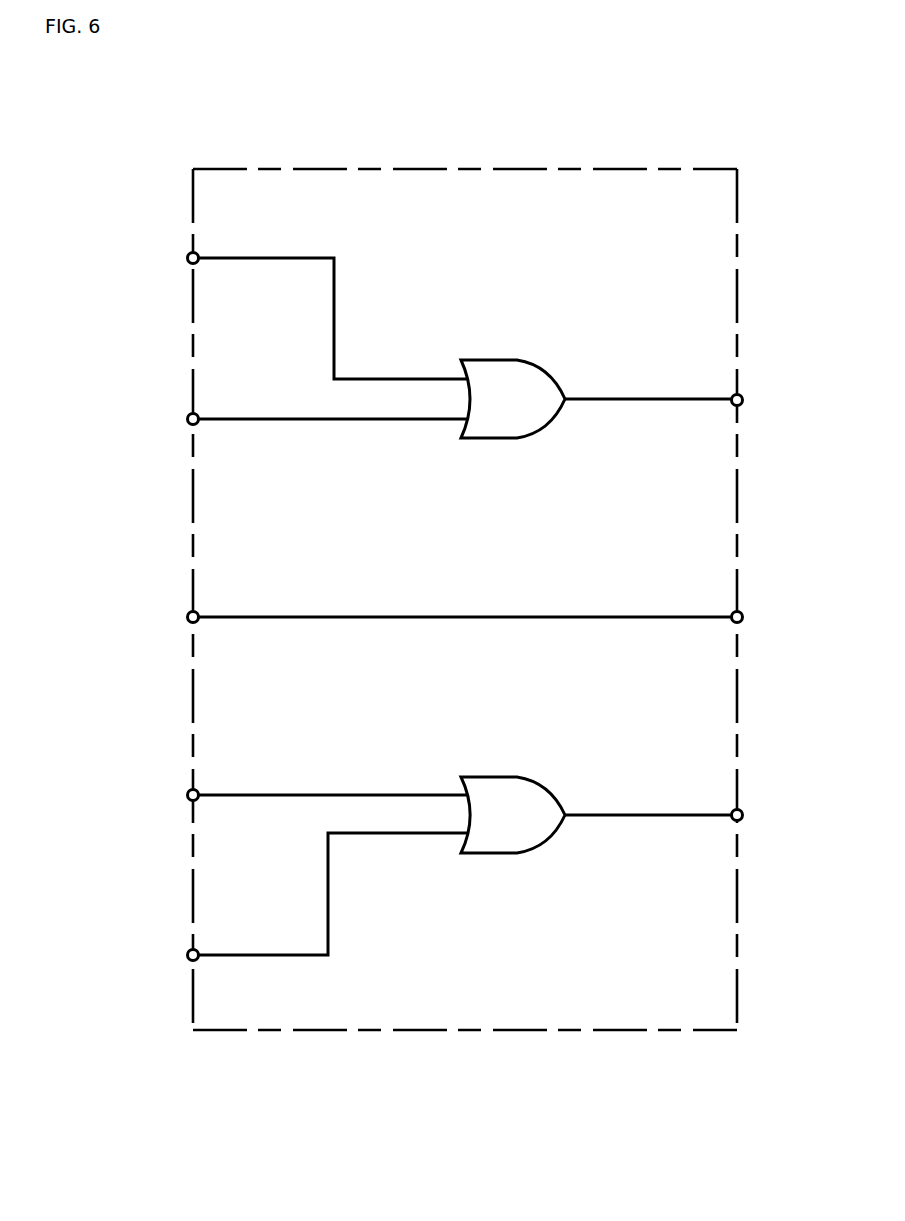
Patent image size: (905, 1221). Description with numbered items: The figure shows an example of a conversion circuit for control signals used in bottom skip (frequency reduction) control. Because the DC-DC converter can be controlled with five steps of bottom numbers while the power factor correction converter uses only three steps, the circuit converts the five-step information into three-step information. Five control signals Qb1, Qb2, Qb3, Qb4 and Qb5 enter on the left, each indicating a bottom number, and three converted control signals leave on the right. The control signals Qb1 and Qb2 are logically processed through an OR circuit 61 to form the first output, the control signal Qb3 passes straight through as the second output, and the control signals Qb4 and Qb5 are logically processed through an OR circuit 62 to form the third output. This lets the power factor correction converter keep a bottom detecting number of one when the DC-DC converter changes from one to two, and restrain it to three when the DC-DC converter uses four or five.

The OR circuit 61 is at (517, 360).
The OR circuit 62 is at (528, 777).
The control signal Qb1 is at (290, 311).
The control signal Qb2 is at (290, 419).
The control signal Qb3 is at (467, 617).
The control signal Qb4 is at (290, 795).
The control signal Qb5 is at (290, 901).